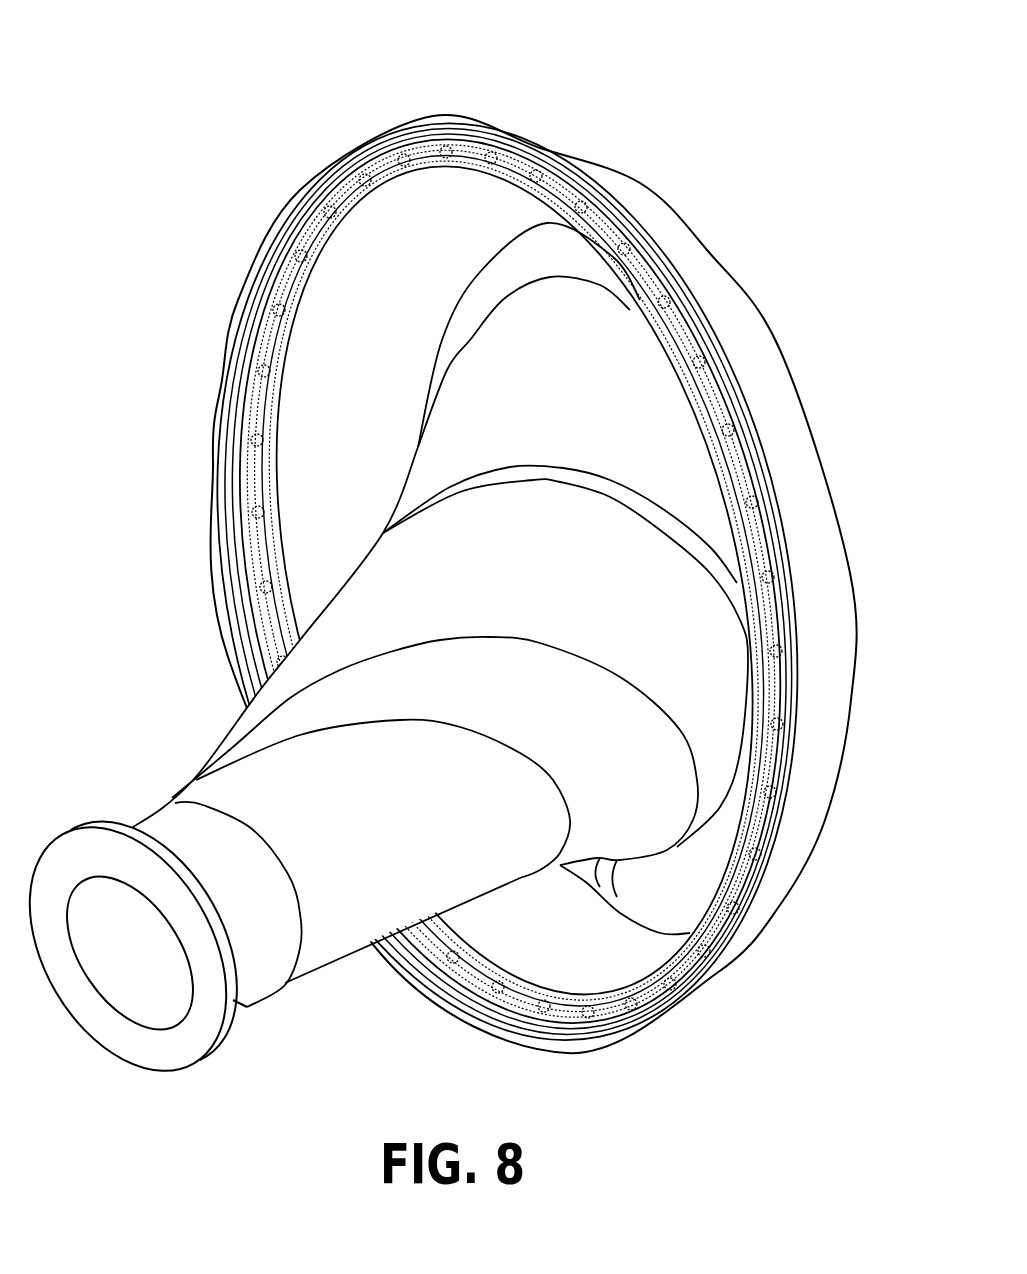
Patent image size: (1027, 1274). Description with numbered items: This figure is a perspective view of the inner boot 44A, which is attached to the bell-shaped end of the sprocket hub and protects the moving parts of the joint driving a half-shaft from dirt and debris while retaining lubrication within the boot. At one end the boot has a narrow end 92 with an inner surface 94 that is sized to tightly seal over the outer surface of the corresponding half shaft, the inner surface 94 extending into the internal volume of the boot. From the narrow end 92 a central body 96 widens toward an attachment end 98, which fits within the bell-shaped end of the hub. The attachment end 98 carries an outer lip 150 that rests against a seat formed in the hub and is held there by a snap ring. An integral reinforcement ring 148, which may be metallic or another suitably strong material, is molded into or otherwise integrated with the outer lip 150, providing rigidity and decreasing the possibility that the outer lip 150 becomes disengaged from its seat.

The inner boot 44A is at (772, 106).
The attachment end 98 is at (580, 150).
The outer lip 150 is at (388, 124).
The integral reinforcement ring 148 is at (268, 347).
The central body 96 is at (293, 728).
The narrow end 92 is at (165, 823).
The inner surface 94 is at (145, 1010).